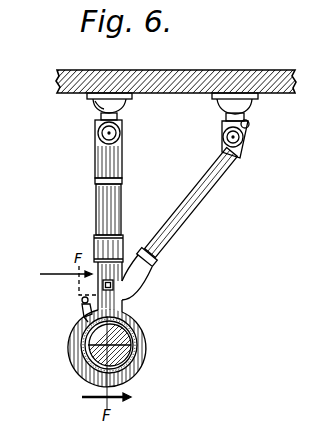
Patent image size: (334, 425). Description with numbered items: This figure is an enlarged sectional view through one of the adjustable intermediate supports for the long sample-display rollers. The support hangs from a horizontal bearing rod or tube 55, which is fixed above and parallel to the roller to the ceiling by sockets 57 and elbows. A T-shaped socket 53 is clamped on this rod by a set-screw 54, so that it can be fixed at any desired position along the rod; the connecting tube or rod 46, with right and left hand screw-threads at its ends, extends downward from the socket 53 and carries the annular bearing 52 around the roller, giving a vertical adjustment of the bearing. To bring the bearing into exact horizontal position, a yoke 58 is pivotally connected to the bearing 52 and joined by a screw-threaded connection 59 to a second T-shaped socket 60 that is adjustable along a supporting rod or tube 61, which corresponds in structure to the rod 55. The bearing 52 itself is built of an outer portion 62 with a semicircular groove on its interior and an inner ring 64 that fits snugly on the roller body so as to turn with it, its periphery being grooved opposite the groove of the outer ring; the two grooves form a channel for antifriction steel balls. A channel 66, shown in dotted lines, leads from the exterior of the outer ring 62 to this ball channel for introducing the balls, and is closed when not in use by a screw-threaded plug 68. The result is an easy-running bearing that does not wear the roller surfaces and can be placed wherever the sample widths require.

The connecting tube or rod 46 is at (122, 200).
The annular bearing 52 is at (130, 328).
The T-shaped socket 53 is at (123, 156).
The set-screw 54 is at (131, 103).
The horizontal bearing rod or tube 55 is at (121, 134).
The sockets 57 is at (89, 98).
The yoke 58 is at (148, 284).
The screw-threaded connection 59 is at (198, 203).
The T-shaped socket 60 is at (241, 156).
The supporting rod or tube 61 is at (244, 139).
The outer portion of ring 62 is at (130, 345).
The inner ring 64 is at (88, 345).
The channel 66 is at (76, 318).
The screw-threaded plug 68 is at (82, 300).